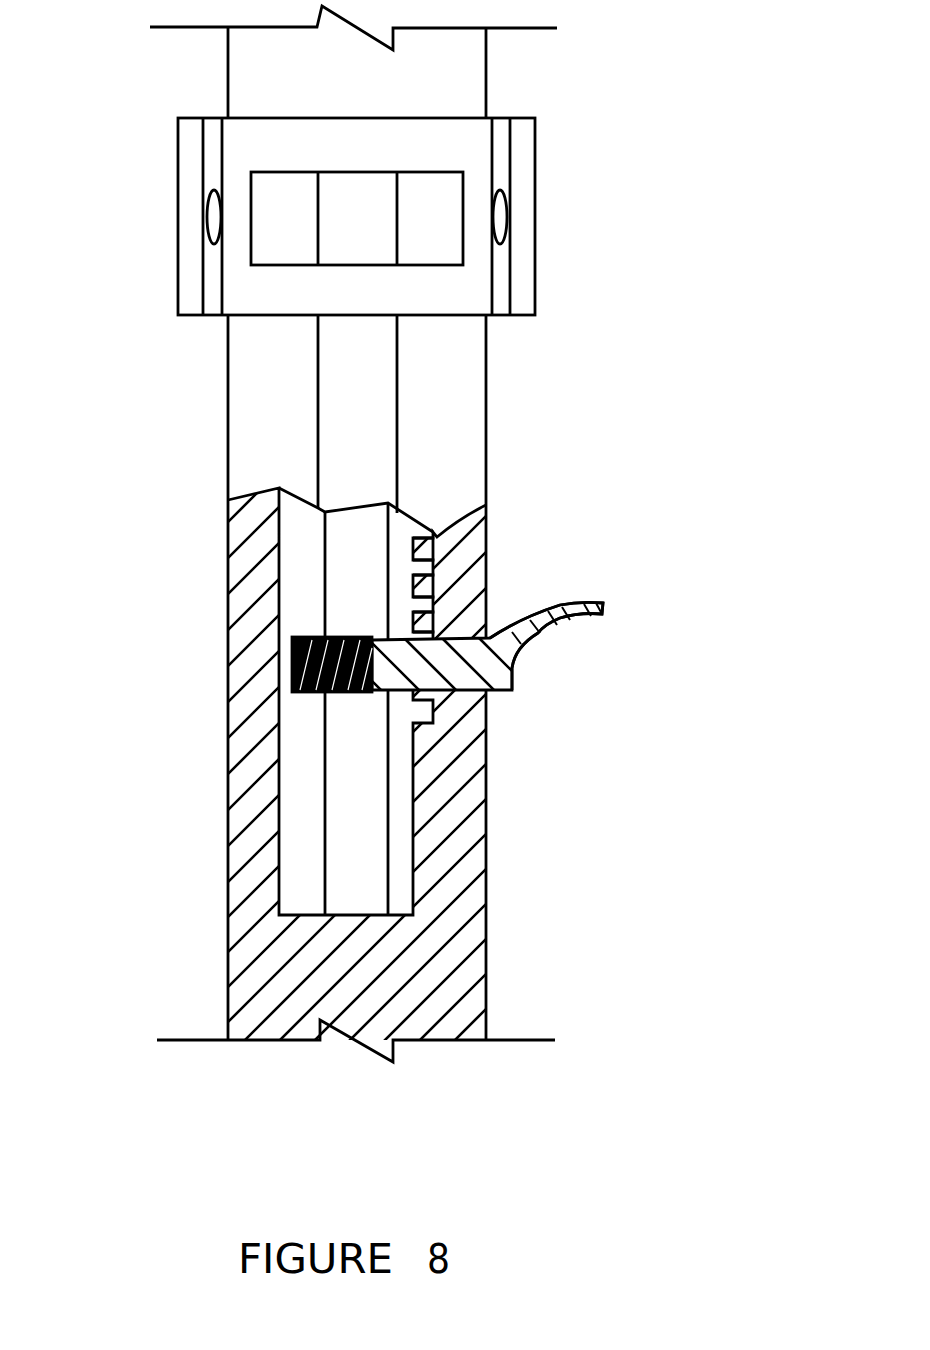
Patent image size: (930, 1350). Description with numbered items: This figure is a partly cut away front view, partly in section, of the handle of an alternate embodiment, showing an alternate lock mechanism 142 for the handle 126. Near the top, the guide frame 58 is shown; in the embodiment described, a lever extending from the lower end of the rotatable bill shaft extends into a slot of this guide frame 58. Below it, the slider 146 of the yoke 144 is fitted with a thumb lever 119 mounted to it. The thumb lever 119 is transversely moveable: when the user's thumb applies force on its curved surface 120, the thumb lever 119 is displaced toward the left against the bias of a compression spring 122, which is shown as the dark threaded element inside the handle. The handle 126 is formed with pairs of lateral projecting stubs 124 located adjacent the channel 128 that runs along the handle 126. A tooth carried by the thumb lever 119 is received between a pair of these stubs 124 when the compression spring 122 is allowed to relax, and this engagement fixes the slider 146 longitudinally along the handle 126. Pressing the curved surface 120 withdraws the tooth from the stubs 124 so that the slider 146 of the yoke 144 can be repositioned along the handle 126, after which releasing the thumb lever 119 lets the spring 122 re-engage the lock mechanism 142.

The yoke 144 is at (468, 79).
The guide frame 58 is at (536, 222).
The slider 146 is at (255, 434).
The lateral projecting stubs 124 is at (480, 515).
The lock mechanism 142 is at (492, 617).
The curved surface 120 is at (577, 617).
The thumb lever 119 is at (542, 635).
The compression spring 122 is at (293, 677).
The handle 126 is at (486, 867).
The channel 128 is at (375, 863).